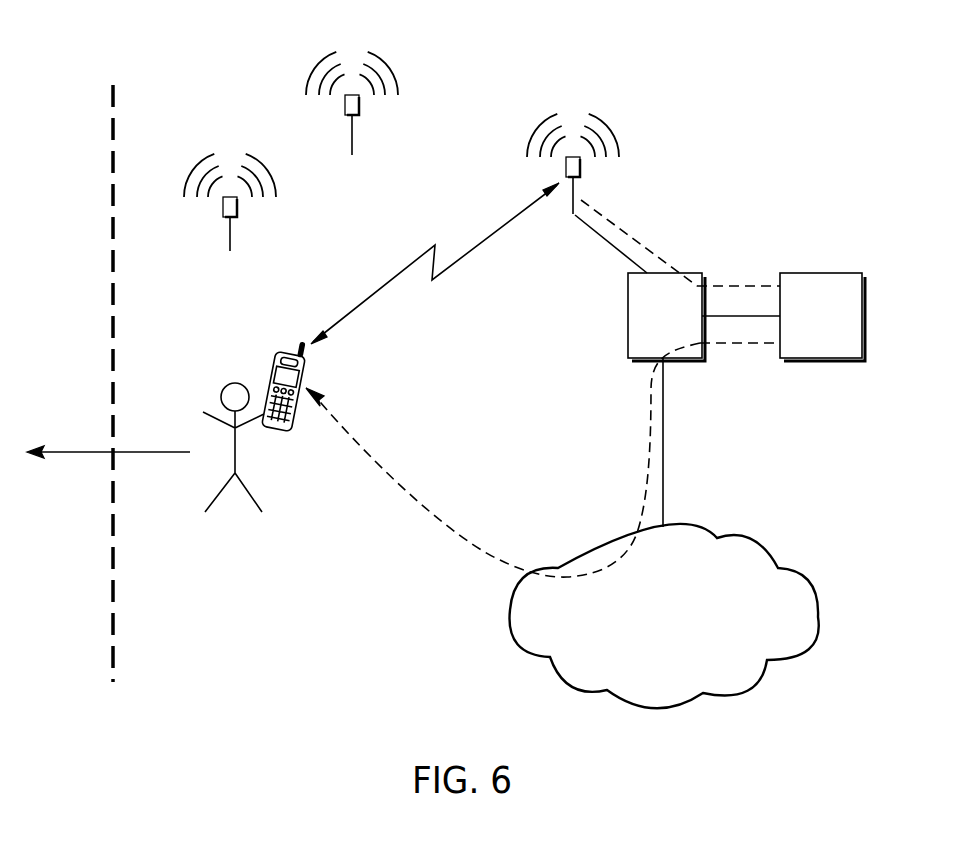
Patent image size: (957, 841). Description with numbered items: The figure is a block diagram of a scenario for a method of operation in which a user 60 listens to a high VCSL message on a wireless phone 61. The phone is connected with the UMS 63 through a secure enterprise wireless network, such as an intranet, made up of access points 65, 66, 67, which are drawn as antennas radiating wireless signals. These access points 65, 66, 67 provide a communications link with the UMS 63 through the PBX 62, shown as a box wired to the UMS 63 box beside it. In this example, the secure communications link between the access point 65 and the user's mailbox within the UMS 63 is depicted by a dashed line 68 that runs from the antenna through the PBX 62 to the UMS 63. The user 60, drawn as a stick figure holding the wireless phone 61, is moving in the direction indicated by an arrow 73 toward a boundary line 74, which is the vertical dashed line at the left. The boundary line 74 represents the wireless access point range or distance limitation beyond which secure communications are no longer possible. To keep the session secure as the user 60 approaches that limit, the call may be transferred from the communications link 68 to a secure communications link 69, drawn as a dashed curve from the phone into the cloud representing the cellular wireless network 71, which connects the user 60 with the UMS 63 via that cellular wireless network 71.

The user 60 is at (237, 453).
The wireless phone 61 is at (280, 358).
The PBX 62 is at (679, 342).
The UMS 63 is at (836, 342).
The access point 65 is at (573, 143).
The access point 66 is at (352, 94).
The access point 67 is at (230, 182).
The dashed line 68 is at (736, 285).
The secure communications link 69 is at (645, 487).
The cellular wireless network 71 is at (677, 663).
The arrow 73 is at (87, 455).
The boundary line 74 is at (113, 637).